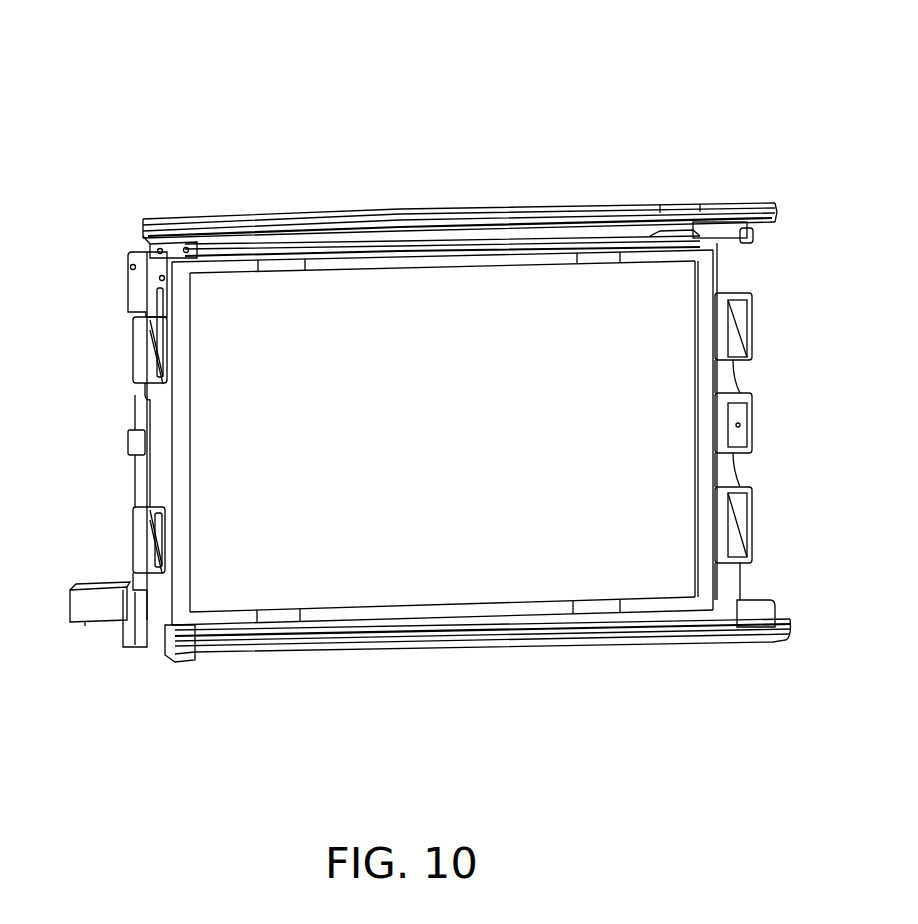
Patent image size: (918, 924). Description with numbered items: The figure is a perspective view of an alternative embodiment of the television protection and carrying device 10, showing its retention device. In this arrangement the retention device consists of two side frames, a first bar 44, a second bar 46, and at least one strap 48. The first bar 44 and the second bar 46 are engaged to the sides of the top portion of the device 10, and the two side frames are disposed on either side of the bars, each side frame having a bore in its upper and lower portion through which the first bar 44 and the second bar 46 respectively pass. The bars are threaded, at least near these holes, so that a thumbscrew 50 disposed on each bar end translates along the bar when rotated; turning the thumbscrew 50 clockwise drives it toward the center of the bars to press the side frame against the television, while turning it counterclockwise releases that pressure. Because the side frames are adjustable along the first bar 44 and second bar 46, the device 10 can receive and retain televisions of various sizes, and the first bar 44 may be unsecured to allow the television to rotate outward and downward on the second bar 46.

The television protection and carrying device 10 is at (246, 90).
The first bar 44 is at (270, 240).
The second bar 46 is at (417, 613).
The strap 48 is at (282, 262).
The thumbscrew 50 is at (145, 623).